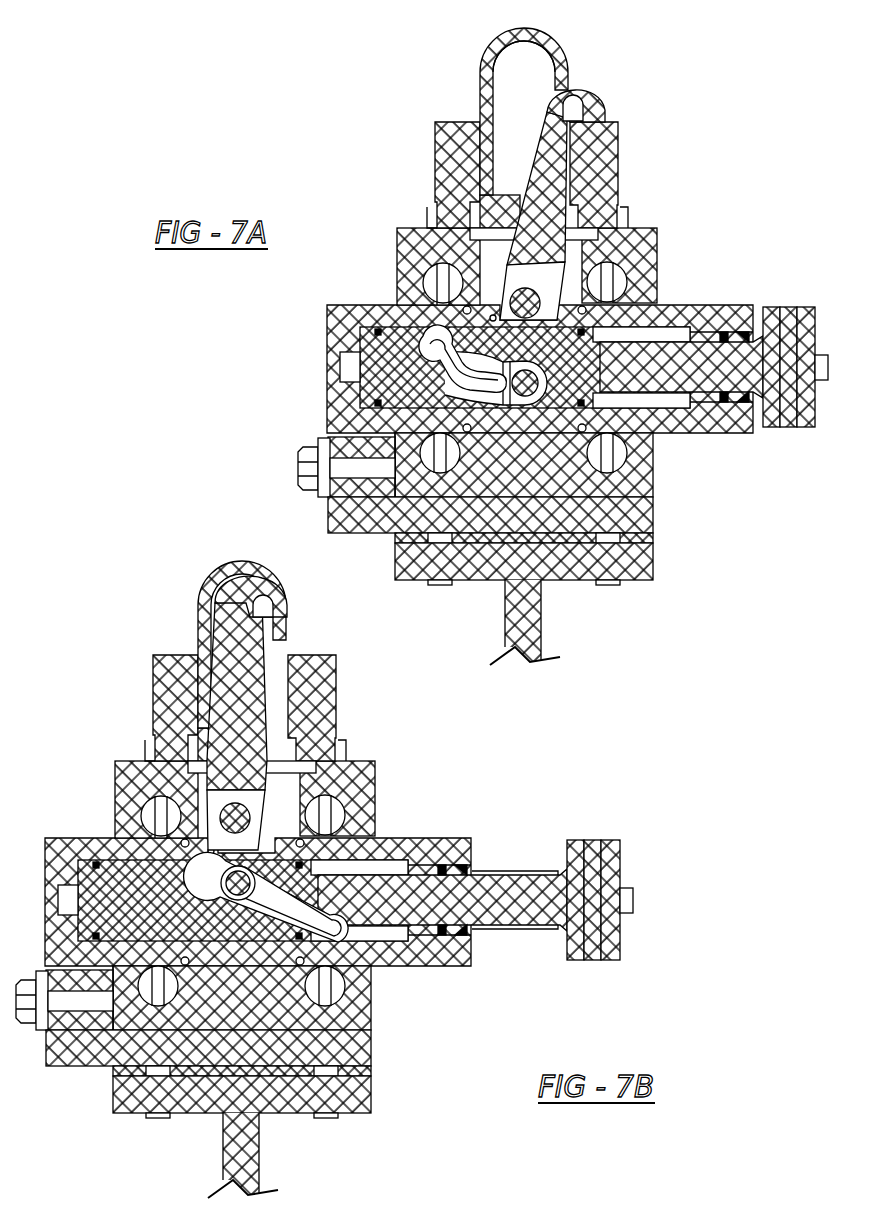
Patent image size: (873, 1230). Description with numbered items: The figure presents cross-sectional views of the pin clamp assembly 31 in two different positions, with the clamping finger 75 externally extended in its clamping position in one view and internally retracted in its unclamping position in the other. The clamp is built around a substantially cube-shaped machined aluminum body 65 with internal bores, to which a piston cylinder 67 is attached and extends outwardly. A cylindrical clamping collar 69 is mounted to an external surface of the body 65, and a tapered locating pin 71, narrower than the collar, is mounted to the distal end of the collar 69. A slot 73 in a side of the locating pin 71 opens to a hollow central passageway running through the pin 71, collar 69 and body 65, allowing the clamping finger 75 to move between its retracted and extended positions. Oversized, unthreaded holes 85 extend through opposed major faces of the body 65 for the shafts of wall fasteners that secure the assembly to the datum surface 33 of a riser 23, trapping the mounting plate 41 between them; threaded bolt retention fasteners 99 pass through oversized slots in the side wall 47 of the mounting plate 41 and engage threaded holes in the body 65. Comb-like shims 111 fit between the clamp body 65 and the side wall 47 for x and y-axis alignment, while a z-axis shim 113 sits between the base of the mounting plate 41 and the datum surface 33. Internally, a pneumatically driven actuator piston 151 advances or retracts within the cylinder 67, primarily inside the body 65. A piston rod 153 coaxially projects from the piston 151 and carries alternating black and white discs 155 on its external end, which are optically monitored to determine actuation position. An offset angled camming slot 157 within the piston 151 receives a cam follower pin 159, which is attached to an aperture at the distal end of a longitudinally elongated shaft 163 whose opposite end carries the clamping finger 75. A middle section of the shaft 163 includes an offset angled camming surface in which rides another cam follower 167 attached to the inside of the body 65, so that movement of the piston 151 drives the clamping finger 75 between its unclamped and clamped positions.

In FIG. 7A, the riser 23 is at (528, 622).
In FIG. 7A, the pin clamp assembly 31 is at (352, 135).
In FIG. 7A, the datum surface 33 is at (638, 542).
In FIG. 7A, the mounting plate 41 is at (343, 507).
In FIG. 7B, the mounting plate 41 is at (78, 1050).
In FIG. 7A, the side wall 47 is at (357, 443).
In FIG. 7A, the body 65 is at (397, 252).
In FIG. 7B, the body 65 is at (350, 1012).
In FIG. 7A, the piston cylinder 67 is at (705, 318).
In FIG. 7B, the piston cylinder 67 is at (433, 957).
In FIG. 7A, the clamping collar 69 is at (435, 125).
In FIG. 7B, the clamping collar 69 is at (178, 657).
In FIG. 7A, the locating pin 71 is at (481, 70).
In FIG. 7B, the locating pin 71 is at (200, 612).
In FIG. 7A, the slot 73 is at (541, 76).
In FIG. 7A, the clamping finger 75 is at (593, 98).
In FIG. 7B, the clamping finger 75 is at (287, 632).
In FIG. 7A, the holes 85 is at (608, 450).
In FIG. 7A, the bolt retention fasteners 99 is at (300, 462).
In FIG. 7A, the shims 111 is at (383, 487).
In FIG. 7A, the z-axis shim 113 is at (497, 540).
In FIG. 7A, the actuator piston 151 is at (383, 352).
In FIG. 7B, the actuator piston 151 is at (163, 902).
In FIG. 7A, the piston rod 153 is at (705, 360).
In FIG. 7B, the piston rod 153 is at (517, 890).
In FIG. 7A, the discs 155 is at (782, 322).
In FIG. 7B, the discs 155 is at (593, 860).
In FIG. 7A, the camming slot 157 is at (443, 358).
In FIG. 7B, the camming slot 157 is at (303, 915).
In FIG. 7A, the cam follower pin 159 is at (527, 385).
In FIG. 7B, the cam follower pin 159 is at (238, 885).
In FIG. 7A, the shaft 163 is at (548, 177).
In FIG. 7B, the shaft 163 is at (245, 788).
In FIG. 7A, the cam follower 167 is at (530, 298).